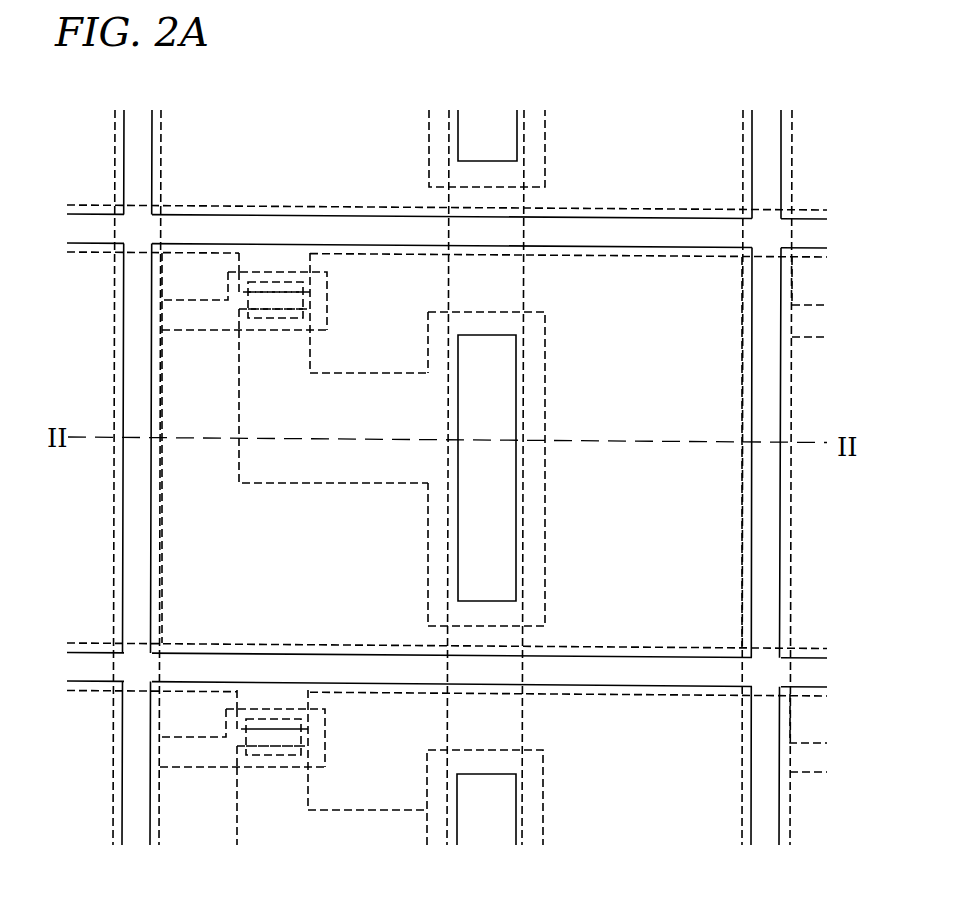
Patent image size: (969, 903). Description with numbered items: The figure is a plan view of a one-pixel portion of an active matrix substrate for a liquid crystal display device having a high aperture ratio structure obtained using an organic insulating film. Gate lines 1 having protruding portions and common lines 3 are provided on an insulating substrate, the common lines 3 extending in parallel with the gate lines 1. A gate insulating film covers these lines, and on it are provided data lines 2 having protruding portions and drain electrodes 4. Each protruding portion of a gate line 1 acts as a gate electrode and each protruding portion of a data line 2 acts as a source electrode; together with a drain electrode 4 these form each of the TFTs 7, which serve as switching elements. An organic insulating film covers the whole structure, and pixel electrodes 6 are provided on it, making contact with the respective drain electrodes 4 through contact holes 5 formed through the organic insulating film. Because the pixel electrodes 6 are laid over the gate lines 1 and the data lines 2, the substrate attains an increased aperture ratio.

The gate line 1 is at (115, 137).
The data line 2 is at (218, 205).
The common line 3 is at (524, 198).
The drain electrode 4 is at (252, 465).
The contact hole 5 is at (500, 370).
The pixel electrode 6 is at (125, 370).
The TFT 7 is at (279, 297).